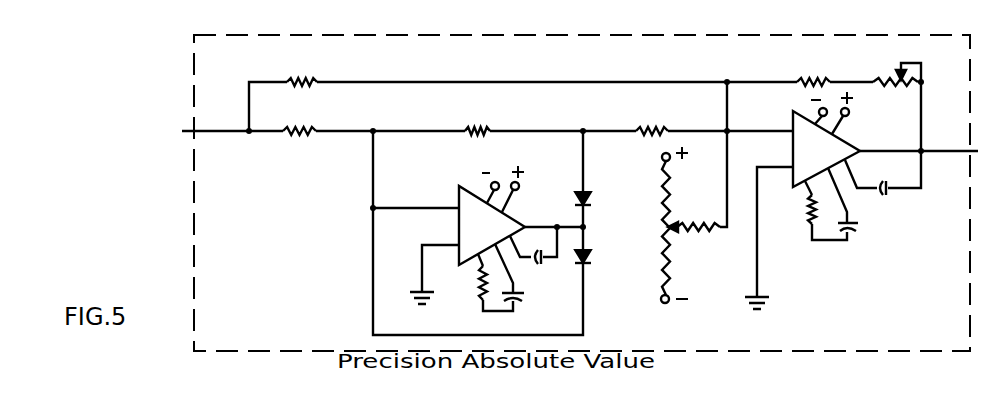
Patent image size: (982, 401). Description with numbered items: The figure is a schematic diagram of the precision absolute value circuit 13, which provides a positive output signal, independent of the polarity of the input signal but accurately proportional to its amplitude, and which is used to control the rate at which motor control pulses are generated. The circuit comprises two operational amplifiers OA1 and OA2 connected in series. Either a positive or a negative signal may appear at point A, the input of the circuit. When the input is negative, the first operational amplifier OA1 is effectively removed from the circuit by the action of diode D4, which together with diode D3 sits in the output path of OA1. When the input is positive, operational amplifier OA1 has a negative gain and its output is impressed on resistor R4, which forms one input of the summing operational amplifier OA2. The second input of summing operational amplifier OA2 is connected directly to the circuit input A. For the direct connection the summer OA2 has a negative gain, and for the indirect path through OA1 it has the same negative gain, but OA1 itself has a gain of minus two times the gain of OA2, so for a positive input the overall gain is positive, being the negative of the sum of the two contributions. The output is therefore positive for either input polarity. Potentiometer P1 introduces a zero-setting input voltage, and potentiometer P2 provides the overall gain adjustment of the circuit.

The precision absolute value circuit 13 is at (194, 203).
The circuit input point A is at (209, 142).
The resistor R4 is at (648, 112).
The operational amplifier OA1 is at (458, 190).
The summing operational amplifier OA2 is at (793, 184).
The diode D3 is at (592, 205).
The diode D4 is at (592, 263).
The potentiometer P1 is at (673, 240).
The potentiometer P2 is at (908, 96).